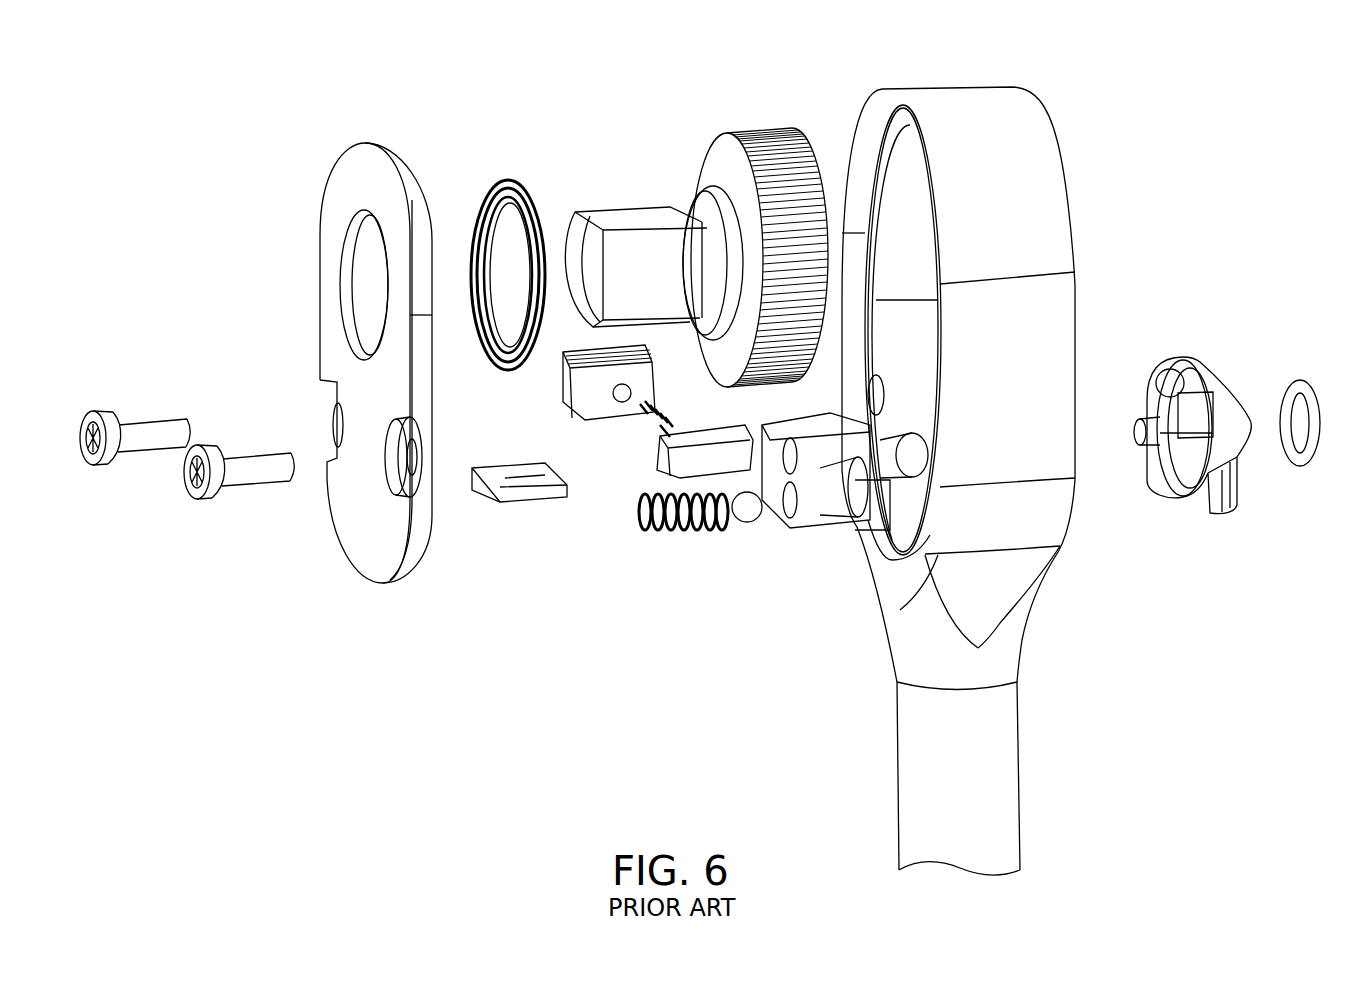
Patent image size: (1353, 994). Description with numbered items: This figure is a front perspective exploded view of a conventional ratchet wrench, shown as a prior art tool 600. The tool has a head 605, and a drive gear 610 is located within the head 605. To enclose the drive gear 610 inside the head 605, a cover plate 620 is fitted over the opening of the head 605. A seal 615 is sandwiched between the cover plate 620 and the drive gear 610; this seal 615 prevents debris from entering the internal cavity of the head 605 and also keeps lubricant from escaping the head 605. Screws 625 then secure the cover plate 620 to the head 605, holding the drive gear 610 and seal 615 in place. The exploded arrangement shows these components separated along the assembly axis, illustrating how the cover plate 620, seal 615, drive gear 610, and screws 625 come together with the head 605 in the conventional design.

The prior art tool 600 is at (198, 110).
The head 605 is at (1022, 188).
The drive gear 610 is at (760, 130).
The seal 615 is at (508, 185).
The cover plate 620 is at (360, 165).
The screws 625 is at (137, 440).